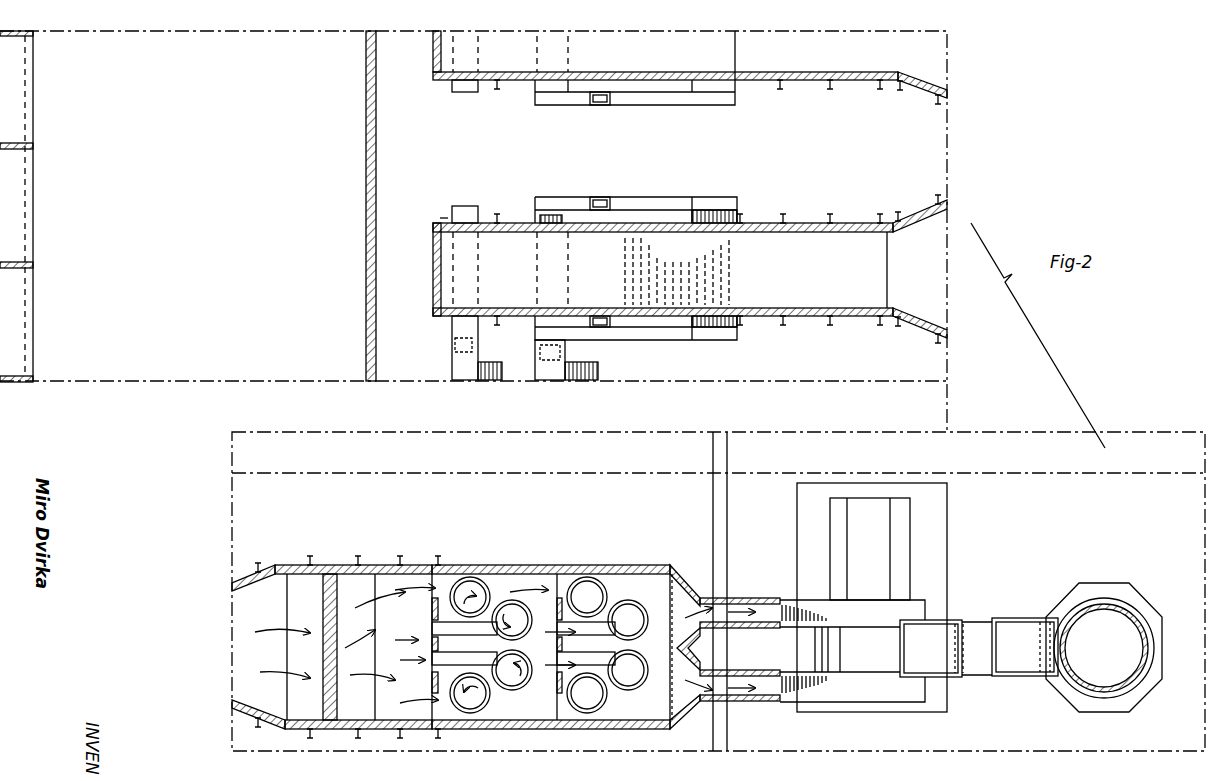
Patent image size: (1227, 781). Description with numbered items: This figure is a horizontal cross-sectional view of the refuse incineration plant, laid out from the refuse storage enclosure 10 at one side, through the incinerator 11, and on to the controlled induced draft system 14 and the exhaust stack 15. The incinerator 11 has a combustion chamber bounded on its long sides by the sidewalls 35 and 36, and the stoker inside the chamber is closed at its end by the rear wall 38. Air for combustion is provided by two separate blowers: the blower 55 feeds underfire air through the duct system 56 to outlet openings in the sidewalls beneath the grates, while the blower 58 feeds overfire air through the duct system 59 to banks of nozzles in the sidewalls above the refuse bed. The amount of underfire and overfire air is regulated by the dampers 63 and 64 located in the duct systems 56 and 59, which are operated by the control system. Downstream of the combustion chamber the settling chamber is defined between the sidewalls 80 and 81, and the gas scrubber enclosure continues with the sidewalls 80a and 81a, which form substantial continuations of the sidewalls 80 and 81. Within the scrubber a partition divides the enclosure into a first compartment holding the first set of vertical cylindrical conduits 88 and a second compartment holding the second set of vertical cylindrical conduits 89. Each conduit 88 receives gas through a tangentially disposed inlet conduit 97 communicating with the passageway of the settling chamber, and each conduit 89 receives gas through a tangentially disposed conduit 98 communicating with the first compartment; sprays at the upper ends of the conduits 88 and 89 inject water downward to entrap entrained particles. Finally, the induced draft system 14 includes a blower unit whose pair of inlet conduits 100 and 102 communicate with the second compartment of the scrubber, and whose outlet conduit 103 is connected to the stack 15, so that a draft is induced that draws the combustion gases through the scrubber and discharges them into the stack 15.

The refuse storage enclosure 10 is at (190, 209).
The incinerator 11 is at (762, 84).
The controlled induced draft system 14 is at (872, 598).
The exhaust stack 15 is at (1130, 614).
The sidewall 35 is at (796, 223).
The sidewall 36 is at (748, 316).
The rear wall 38 is at (432, 275).
The blower 55 is at (487, 380).
The duct system 56 is at (446, 216).
The blower 58 is at (596, 380).
The duct system 59 is at (642, 197).
The damper 63 is at (454, 354).
The damper 64 is at (562, 352).
The sidewall 80 is at (380, 565).
The sidewall 80a is at (570, 565).
The sidewall 81 is at (372, 729).
The sidewall 81a is at (545, 729).
The first set of vertical cylindrical conduits 88 is at (478, 588).
The second set of vertical cylindrical conduits 89 is at (620, 575).
The inlet conduit 97 is at (470, 578).
The tangentially disposed conduit 98 is at (590, 578).
The inlet conduit 100 is at (782, 598).
The inlet conduit 102 is at (745, 701).
The outlet conduit 103 is at (975, 630).